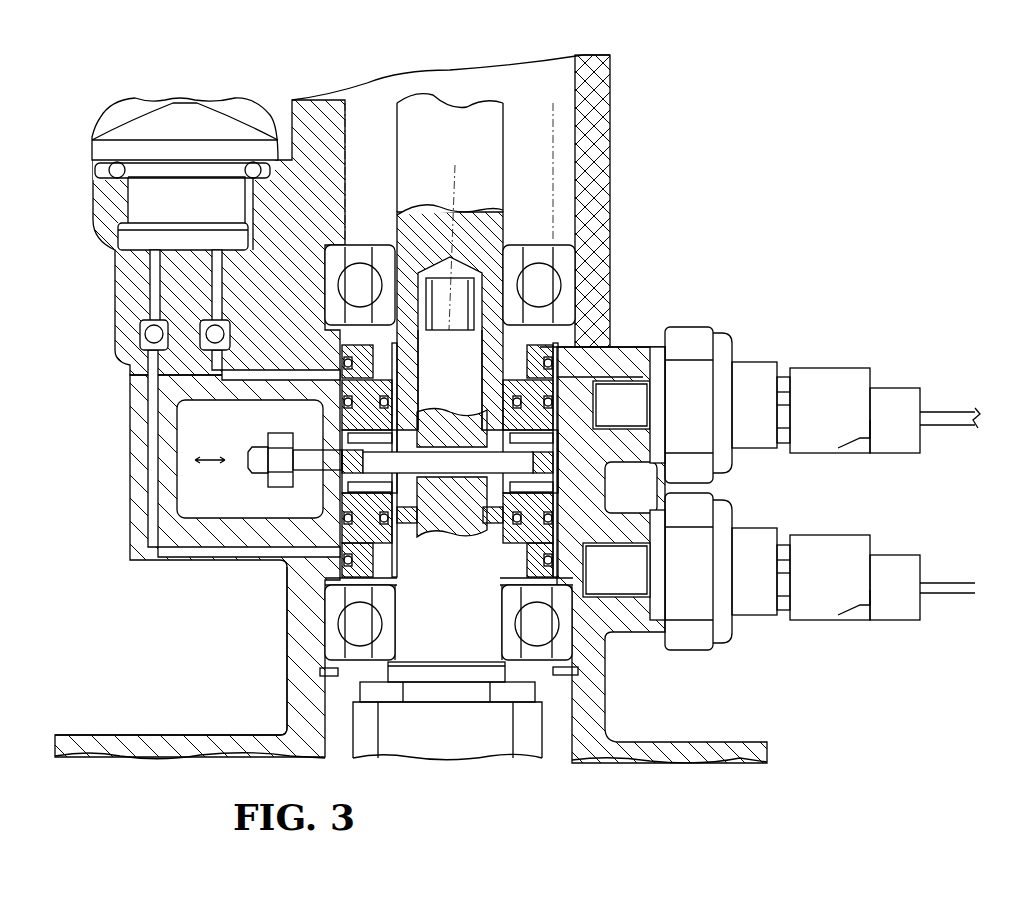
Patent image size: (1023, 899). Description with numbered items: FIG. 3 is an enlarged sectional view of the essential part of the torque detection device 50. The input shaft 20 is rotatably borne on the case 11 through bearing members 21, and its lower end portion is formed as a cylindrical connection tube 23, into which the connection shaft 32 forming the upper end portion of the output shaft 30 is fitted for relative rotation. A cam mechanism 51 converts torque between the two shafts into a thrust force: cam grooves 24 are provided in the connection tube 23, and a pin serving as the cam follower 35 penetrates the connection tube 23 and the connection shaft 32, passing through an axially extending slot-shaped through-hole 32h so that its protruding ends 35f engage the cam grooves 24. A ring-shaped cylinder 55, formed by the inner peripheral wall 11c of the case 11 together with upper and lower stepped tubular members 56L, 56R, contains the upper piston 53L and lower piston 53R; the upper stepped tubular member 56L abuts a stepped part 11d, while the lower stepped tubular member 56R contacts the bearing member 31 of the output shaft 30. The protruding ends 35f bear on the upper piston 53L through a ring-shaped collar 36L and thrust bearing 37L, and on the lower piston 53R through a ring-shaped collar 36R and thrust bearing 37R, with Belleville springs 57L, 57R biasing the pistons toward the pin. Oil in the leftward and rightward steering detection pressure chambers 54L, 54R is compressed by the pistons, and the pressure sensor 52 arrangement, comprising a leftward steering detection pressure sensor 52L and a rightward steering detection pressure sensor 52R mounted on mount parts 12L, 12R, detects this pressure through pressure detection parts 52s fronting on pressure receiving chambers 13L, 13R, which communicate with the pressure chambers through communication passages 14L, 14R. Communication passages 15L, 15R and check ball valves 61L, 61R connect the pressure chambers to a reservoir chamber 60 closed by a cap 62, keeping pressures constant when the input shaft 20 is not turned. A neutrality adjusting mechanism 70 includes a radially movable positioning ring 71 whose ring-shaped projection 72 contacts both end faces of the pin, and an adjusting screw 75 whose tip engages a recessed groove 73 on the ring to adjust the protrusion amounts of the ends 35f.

The case 11 is at (610, 133).
The inner peripheral wall 11c is at (335, 548).
The stepped part 11d is at (570, 283).
The mount part 12L is at (620, 355).
The mount part 12R is at (610, 607).
The pressure receiving chamber 13L is at (592, 395).
The pressure receiving chamber 13R is at (600, 637).
The communication passage 14L is at (600, 345).
The communication passage 14R is at (607, 647).
The communication passage 15L is at (210, 373).
The communication passage 15R is at (165, 563).
The input shaft 20 is at (503, 127).
The bearing member 21 is at (565, 238).
The connection tube 23 is at (572, 260).
The cam grooves 24 is at (415, 440).
The output shaft 30 is at (472, 745).
The bearing member 31 is at (333, 637).
The connection shaft 32 is at (457, 235).
The through-hole 32h is at (447, 537).
The cam follower 35 is at (445, 452).
The protruding ends 35f is at (405, 527).
The ring-shaped collar 36L is at (540, 470).
The ring-shaped collar 36R is at (560, 525).
The thrust bearing 37L is at (540, 445).
The thrust bearing 37R is at (560, 555).
The torque detection device 50 is at (819, 143).
The cam mechanism 51 is at (452, 588).
The pressure sensor 52 is at (973, 319).
The leftward steering detection pressure sensor 52L is at (883, 397).
The rightward steering detection pressure sensor 52R is at (888, 565).
The pressure detection parts 52s is at (598, 412).
The upper piston 53L is at (343, 413).
The lower piston 53R is at (343, 505).
The leftward steering detection pressure chamber 54L is at (620, 367).
The rightward steering detection pressure chamber 54R is at (618, 603).
The cylinder 55 is at (290, 555).
The upper stepped tubular member 56L is at (560, 310).
The lower stepped tubular member 56R is at (330, 588).
The Belleville spring 57L is at (382, 340).
The Belleville spring 57R is at (330, 598).
The reservoir chamber 60 is at (130, 250).
The check ball valve 61L is at (202, 298).
The check ball valve 61R is at (133, 330).
The cap 62 is at (105, 107).
The neutrality adjusting mechanism 70 is at (259, 459).
The positioning ring 71 is at (552, 465).
The ring-shaped projection 72 is at (552, 442).
The recessed groove 73 is at (340, 440).
The adjusting screw 75 is at (247, 462).